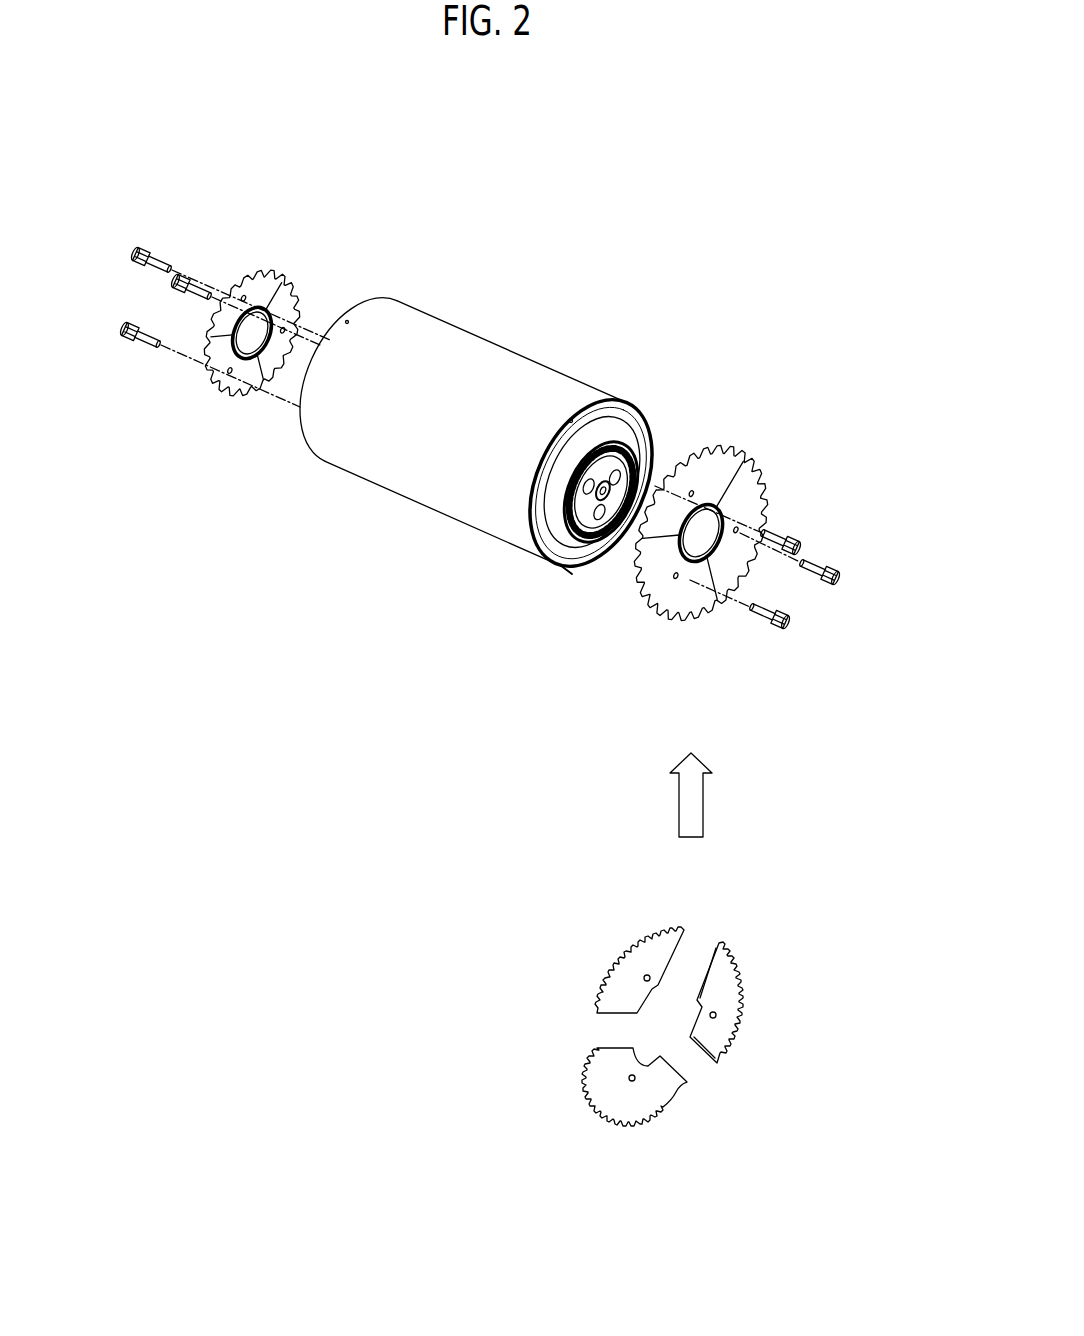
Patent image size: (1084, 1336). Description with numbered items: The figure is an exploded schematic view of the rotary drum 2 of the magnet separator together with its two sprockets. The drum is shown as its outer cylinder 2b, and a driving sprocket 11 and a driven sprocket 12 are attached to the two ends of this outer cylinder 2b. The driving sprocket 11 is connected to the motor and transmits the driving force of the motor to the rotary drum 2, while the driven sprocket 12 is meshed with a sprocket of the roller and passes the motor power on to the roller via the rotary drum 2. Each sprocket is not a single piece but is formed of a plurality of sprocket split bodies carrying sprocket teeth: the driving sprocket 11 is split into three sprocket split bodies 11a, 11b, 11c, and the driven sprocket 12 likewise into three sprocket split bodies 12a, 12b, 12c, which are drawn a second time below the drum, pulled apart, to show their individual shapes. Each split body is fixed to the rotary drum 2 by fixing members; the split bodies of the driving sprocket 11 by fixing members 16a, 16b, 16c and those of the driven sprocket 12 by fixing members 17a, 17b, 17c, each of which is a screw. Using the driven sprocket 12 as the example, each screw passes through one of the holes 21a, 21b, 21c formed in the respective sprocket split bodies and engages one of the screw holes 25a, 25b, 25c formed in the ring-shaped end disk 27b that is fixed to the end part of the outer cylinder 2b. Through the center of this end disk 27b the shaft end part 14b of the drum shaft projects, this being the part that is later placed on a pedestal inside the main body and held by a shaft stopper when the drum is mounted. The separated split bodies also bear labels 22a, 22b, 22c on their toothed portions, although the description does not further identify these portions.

The rotary drum 2 is at (397, 363).
The outer cylinder 2b is at (462, 383).
The driving sprocket 11 is at (245, 413).
The sprocket split body 11a is at (217, 388).
The sprocket split body 11b is at (293, 283).
The sprocket split body 11c is at (257, 270).
The driven sprocket 12 is at (662, 620).
The sprocket split body 12a is at (700, 602).
The sprocket split body 12b is at (748, 503).
The sprocket split body 12c is at (717, 470).
The shaft end part 14b is at (600, 442).
The fixing member 16a is at (130, 343).
The fixing member 16b is at (180, 276).
The fixing member 16c is at (137, 250).
The fixing member 17a is at (783, 628).
The fixing member 17b is at (837, 582).
The fixing member 17c is at (807, 535).
The hole 21a is at (629, 1079).
The hole 21b is at (716, 1015).
The hole 21c is at (644, 979).
The tooth portion of split piece 22a is at (608, 1117).
The tooth portion of split piece 22b is at (730, 1058).
The tooth portion of split piece 22c is at (612, 958).
The screw hole 25a is at (540, 548).
The screw hole 25b is at (655, 436).
The screw hole 25c is at (572, 458).
The end disk 27b is at (565, 572).